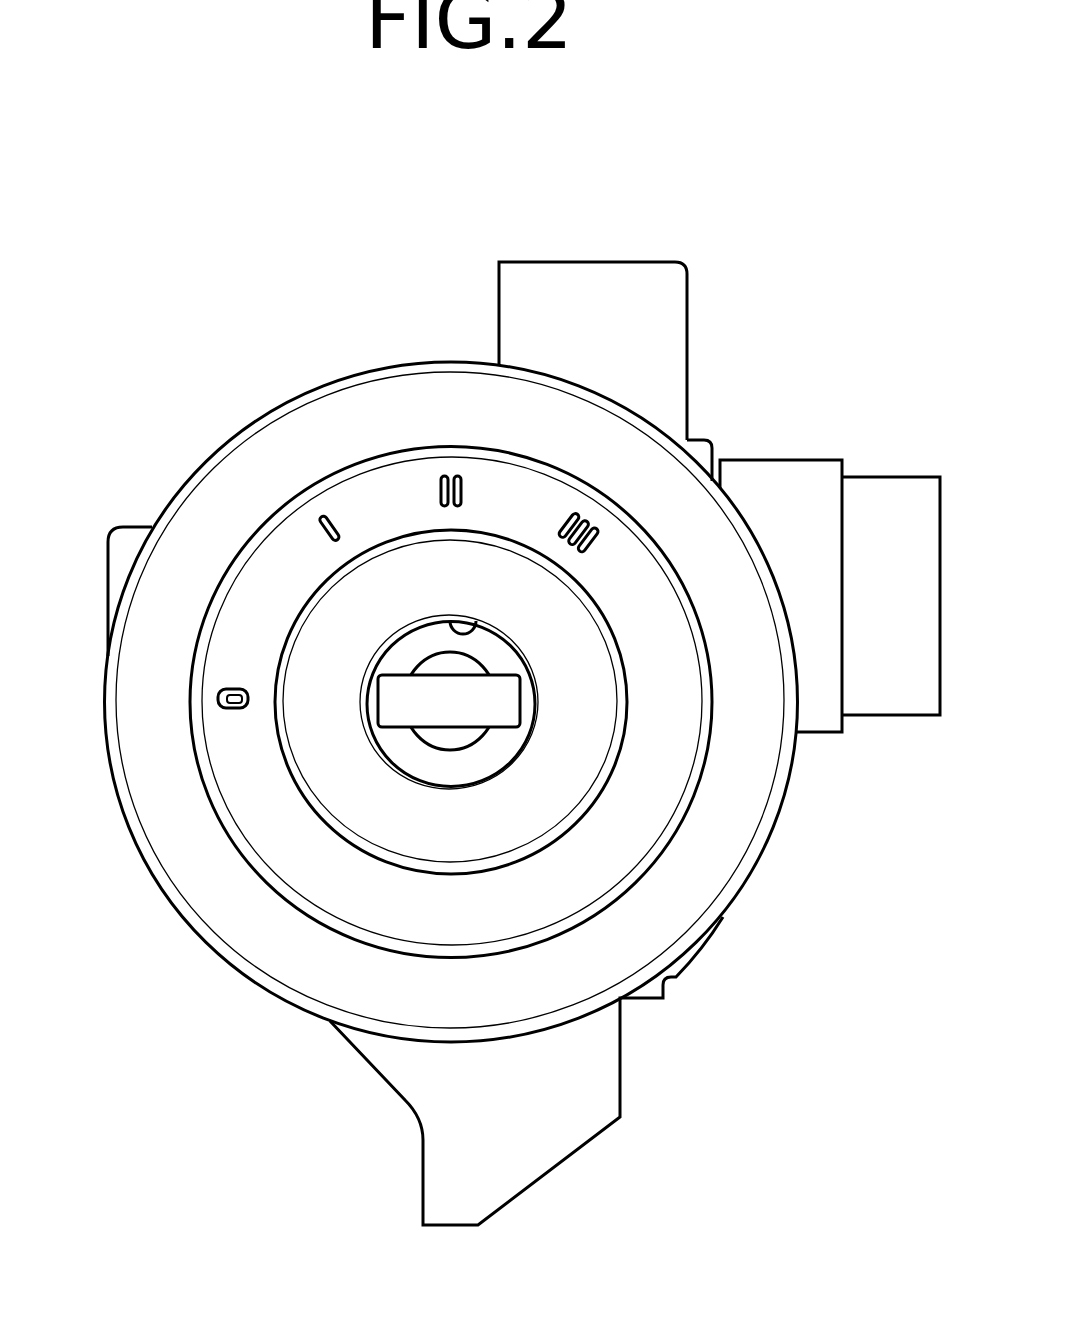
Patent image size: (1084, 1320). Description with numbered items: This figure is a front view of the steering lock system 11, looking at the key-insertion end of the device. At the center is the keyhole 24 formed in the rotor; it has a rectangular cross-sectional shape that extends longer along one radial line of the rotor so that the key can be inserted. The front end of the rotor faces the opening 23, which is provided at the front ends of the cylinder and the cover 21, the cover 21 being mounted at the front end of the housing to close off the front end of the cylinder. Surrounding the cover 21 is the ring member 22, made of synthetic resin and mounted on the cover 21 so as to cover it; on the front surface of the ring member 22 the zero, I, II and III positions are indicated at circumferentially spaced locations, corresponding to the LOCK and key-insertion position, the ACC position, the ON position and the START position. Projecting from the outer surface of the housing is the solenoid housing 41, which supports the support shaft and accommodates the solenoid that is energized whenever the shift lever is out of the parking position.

The steering lock system 11 is at (272, 397).
The cover 21 is at (583, 778).
The ring member 22 is at (392, 395).
The opening 23 is at (470, 636).
The keyhole 24 is at (452, 677).
The solenoid housing 41 is at (612, 288).